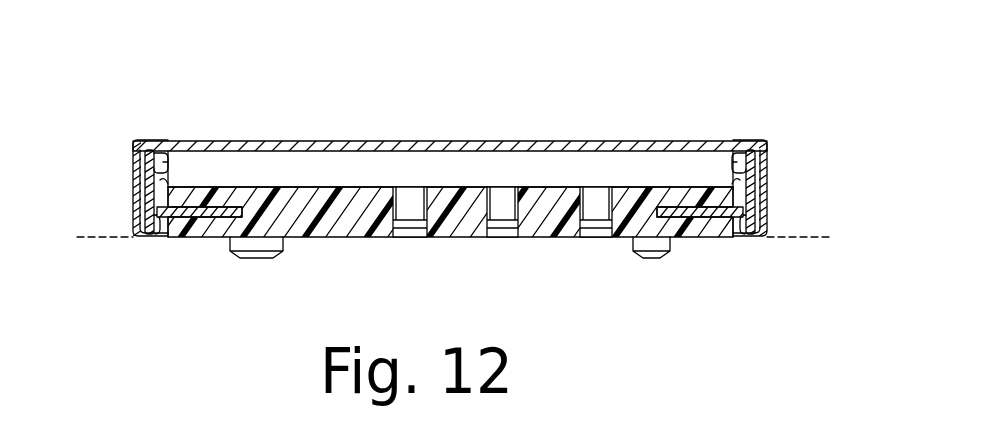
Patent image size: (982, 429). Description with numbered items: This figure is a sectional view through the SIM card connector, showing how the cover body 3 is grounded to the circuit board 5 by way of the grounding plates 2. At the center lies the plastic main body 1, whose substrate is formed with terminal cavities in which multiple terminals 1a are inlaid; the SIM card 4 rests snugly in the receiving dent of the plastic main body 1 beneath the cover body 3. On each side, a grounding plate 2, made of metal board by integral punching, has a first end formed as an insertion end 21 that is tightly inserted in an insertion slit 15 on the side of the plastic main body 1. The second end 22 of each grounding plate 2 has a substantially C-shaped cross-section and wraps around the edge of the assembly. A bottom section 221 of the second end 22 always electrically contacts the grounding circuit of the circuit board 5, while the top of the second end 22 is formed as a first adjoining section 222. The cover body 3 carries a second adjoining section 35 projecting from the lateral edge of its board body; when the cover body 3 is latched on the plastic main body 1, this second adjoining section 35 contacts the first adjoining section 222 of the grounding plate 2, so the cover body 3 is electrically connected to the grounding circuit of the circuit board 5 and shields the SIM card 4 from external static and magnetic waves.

The plastic main body 1 is at (320, 210).
The terminals 1a is at (410, 208).
The grounding plate 2 is at (132, 211).
The insertion end 21 is at (209, 219).
The second end 22 is at (142, 200).
The bottom section 221 is at (148, 238).
The first adjoining section 222 is at (153, 160).
The cover body 3 is at (572, 139).
The second adjoining section 35 is at (160, 183).
The SIM card 4 is at (453, 164).
The circuit board 5 is at (120, 237).
The insertion slit 15 is at (238, 218).